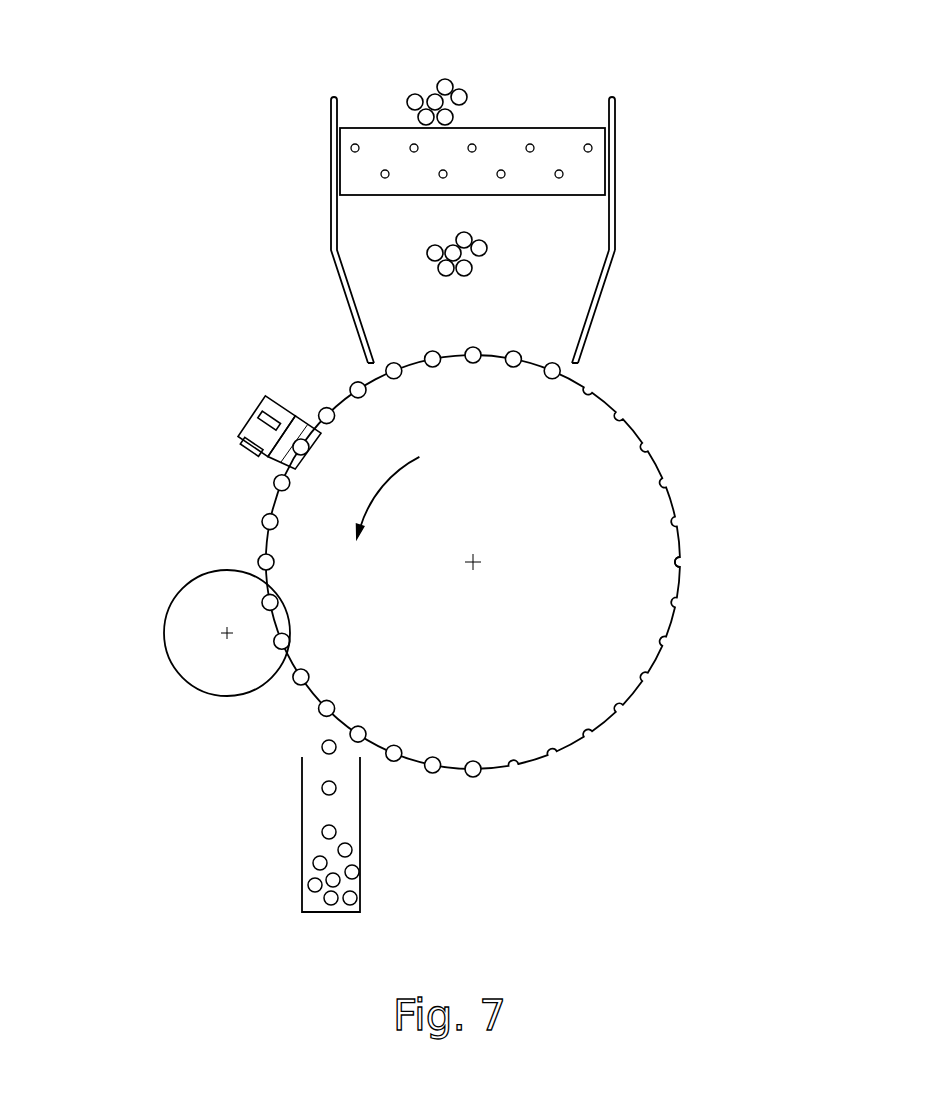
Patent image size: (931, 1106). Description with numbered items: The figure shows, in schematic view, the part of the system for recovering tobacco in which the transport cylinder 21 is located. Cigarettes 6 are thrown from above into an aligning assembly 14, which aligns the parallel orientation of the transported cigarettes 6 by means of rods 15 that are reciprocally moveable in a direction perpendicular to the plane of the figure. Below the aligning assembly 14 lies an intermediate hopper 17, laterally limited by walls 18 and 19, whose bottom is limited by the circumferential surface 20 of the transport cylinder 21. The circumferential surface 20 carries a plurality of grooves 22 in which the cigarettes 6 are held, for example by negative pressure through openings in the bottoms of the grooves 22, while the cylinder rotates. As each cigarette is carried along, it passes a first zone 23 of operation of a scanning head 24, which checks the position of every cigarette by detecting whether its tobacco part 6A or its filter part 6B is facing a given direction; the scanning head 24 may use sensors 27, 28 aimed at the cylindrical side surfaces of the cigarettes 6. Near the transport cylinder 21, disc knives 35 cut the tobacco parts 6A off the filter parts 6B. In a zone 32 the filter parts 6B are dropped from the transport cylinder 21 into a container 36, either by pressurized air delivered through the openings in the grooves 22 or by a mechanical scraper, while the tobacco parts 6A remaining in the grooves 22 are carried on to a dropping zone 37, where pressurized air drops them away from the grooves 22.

The cigarettes 6 is at (412, 100).
The tobacco part 6A is at (478, 776).
The filter part 6B is at (322, 750).
The aligning assembly 14 is at (484, 191).
The rods 15 is at (353, 148).
The intermediate hopper 17 is at (623, 258).
The wall 18 is at (343, 292).
The wall 19 is at (588, 335).
The circumferential surface 20 is at (536, 595).
The transport cylinder 21 is at (660, 620).
The grooves 22 is at (677, 562).
The first zone 23 is at (273, 463).
The scanning head 24 is at (200, 375).
The sensor 27 is at (240, 442).
The sensor 28 is at (257, 408).
The zone 32 is at (298, 722).
The disc knife 35 is at (190, 662).
The container 36 is at (269, 834).
The dropping zone 37 is at (462, 800).